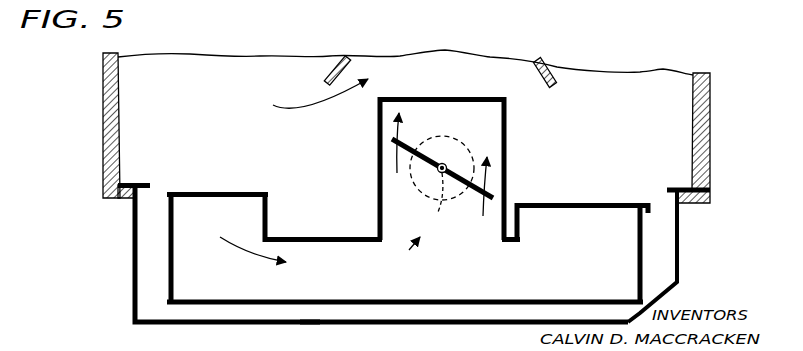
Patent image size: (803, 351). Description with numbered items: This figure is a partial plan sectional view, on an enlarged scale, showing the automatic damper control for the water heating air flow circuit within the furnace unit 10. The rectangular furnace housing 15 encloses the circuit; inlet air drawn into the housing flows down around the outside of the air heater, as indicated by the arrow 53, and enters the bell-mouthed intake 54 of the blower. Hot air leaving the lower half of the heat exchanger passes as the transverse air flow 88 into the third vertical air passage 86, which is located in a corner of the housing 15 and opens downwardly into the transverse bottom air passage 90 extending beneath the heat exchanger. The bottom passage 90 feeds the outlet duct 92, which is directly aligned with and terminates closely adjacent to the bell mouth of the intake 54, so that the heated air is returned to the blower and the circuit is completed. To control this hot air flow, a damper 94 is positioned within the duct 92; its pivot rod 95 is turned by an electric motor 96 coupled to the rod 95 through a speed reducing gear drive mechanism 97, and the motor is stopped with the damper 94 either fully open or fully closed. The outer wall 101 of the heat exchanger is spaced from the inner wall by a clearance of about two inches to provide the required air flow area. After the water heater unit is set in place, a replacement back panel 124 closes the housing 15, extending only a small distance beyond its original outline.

The furnace unit 10 is at (676, 63).
The furnace housing 15 is at (711, 127).
The inlet air flow arrow 53 is at (295, 112).
The bell-mouthed intake 54 is at (343, 62).
The third vertical air passage 86 is at (204, 237).
The transverse air flow 88 is at (242, 256).
The transverse bottom air passage 90 is at (477, 292).
The outlet duct 92 is at (378, 137).
The damper 94 is at (409, 142).
The pivot rod 95 is at (452, 158).
The electric motor 96 is at (413, 188).
The speed reducing gear drive mechanism 97 is at (453, 201).
The outer wall 101 is at (368, 300).
The replacement back panel 124 is at (304, 323).